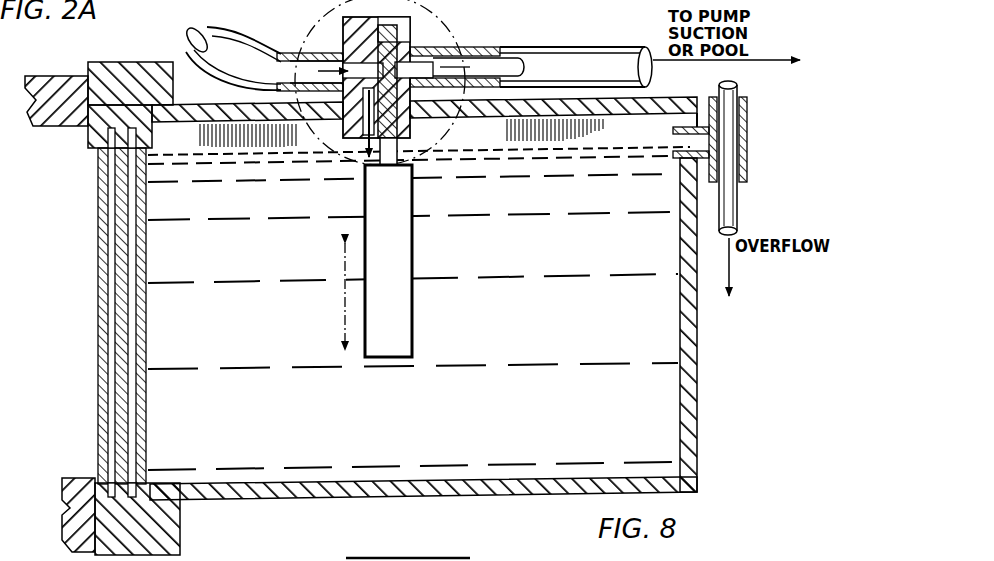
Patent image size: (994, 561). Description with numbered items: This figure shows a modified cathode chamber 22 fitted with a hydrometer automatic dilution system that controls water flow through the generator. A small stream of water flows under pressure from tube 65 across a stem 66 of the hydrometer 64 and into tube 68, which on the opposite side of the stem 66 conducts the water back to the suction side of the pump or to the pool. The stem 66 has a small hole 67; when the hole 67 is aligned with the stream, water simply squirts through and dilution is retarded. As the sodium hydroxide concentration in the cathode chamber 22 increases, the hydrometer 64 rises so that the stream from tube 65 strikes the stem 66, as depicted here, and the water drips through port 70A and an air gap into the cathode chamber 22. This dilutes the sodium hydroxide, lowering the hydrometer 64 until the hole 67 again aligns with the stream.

The cathode chamber 22 is at (381, 496).
The hydrometer 64 is at (362, 187).
The tube 65 is at (254, 56).
The stem 66 is at (395, 42).
The hole 67 is at (444, 18).
The tube 68 is at (481, 28).
The port 70A is at (363, 176).